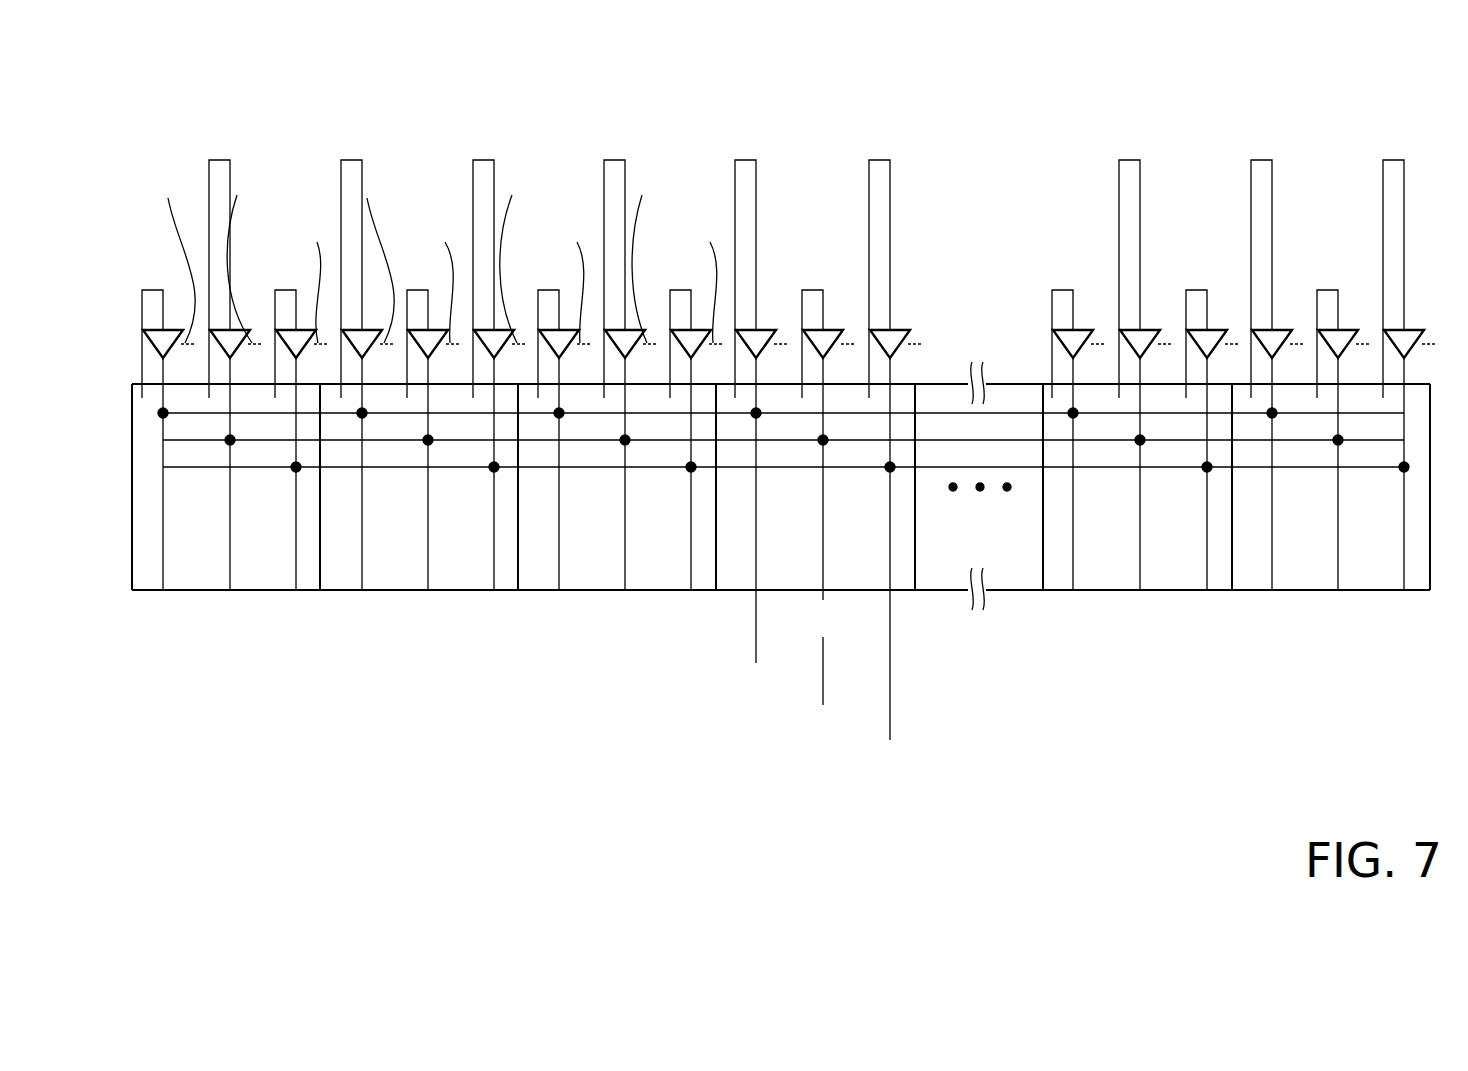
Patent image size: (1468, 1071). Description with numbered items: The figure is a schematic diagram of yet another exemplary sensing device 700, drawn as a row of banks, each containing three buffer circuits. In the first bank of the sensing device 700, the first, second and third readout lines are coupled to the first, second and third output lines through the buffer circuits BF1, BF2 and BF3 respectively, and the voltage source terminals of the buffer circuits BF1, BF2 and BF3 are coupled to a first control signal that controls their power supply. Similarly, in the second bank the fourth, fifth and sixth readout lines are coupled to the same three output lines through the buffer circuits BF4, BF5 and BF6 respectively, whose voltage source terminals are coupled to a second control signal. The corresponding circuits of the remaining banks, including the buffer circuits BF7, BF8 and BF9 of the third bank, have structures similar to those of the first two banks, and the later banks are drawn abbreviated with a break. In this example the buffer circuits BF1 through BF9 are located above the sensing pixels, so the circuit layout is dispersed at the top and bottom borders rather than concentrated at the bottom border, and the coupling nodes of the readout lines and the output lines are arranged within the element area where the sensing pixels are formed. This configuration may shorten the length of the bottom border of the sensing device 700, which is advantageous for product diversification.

The sensing device 700 is at (148, 46).
The buffer circuit BF1 is at (172, 440).
The buffer circuit BF2 is at (240, 375).
The buffer circuit BF3 is at (305, 440).
The buffer circuit BF4 is at (371, 375).
The buffer circuit BF5 is at (437, 440).
The buffer circuit BF6 is at (503, 375).
The buffer circuit BF7 is at (568, 440).
The buffer circuit BF8 is at (634, 375).
The buffer circuit BF9 is at (700, 440).